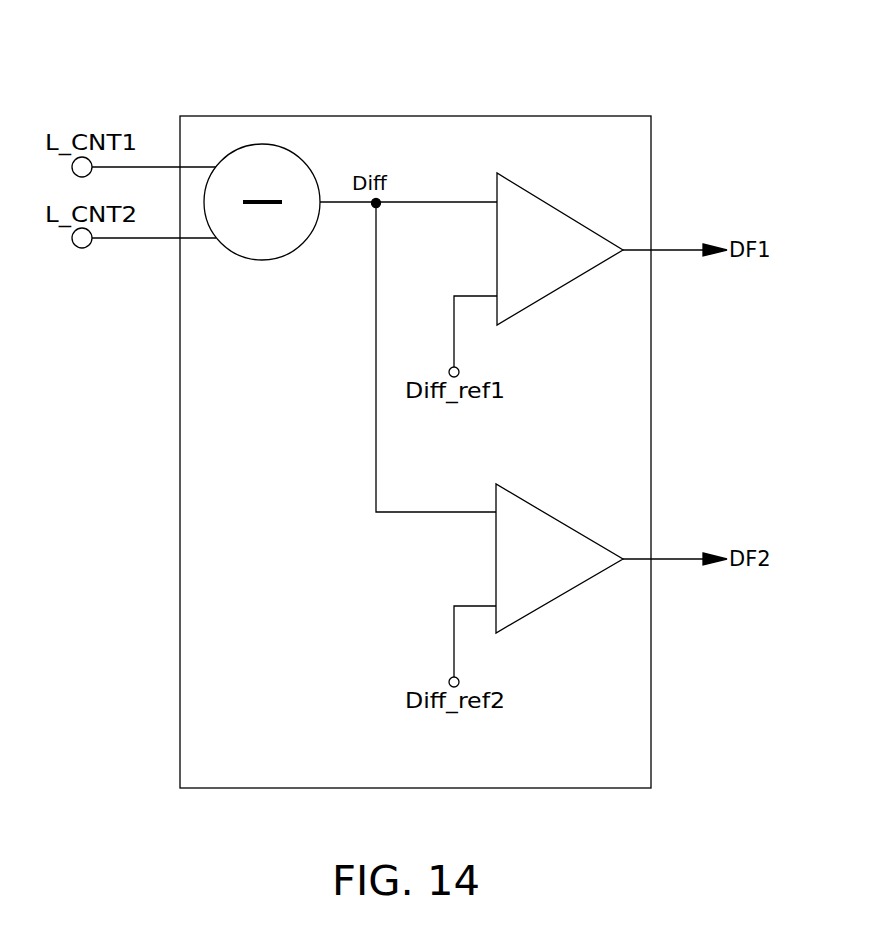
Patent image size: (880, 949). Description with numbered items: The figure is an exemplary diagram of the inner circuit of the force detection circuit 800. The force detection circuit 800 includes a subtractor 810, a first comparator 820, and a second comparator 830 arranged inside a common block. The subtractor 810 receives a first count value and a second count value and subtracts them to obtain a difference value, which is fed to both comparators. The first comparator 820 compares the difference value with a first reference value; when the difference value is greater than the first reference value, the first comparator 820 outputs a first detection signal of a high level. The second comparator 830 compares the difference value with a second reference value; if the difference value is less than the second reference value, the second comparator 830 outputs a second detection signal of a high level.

The force detection circuit 800 is at (607, 115).
The subtractor 810 is at (262, 144).
The first comparator 820 is at (563, 208).
The second comparator 830 is at (563, 518).